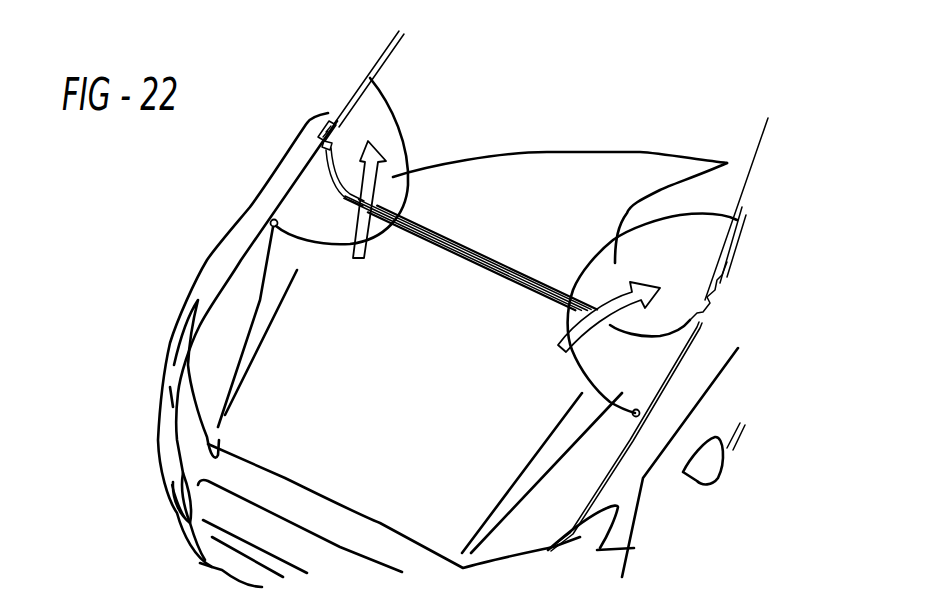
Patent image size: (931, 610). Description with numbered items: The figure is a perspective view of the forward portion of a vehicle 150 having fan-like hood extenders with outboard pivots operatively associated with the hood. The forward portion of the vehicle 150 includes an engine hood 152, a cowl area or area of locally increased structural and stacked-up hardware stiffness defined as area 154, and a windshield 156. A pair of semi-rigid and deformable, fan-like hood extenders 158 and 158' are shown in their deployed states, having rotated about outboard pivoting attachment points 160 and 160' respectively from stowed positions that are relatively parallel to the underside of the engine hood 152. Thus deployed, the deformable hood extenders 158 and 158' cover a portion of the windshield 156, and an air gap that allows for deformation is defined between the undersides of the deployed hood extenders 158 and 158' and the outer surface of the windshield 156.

The vehicle 150 is at (180, 252).
The engine hood 152 is at (345, 401).
The cowl area 154 is at (727, 163).
The windshield 156 is at (455, 98).
The hood extender 158 is at (340, 146).
The hood extender 158' is at (698, 313).
The outboard pivoting attachment point 160 is at (235, 184).
The outboard pivoting attachment point 160' is at (733, 410).